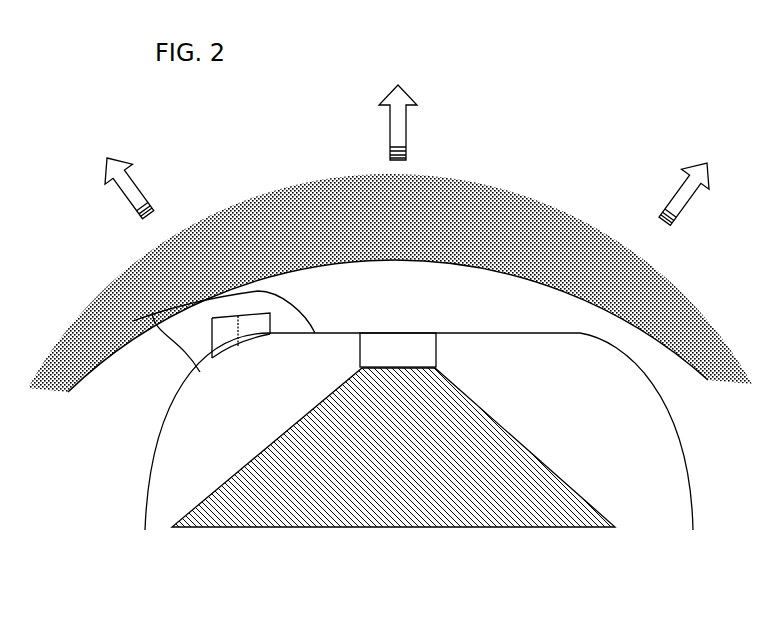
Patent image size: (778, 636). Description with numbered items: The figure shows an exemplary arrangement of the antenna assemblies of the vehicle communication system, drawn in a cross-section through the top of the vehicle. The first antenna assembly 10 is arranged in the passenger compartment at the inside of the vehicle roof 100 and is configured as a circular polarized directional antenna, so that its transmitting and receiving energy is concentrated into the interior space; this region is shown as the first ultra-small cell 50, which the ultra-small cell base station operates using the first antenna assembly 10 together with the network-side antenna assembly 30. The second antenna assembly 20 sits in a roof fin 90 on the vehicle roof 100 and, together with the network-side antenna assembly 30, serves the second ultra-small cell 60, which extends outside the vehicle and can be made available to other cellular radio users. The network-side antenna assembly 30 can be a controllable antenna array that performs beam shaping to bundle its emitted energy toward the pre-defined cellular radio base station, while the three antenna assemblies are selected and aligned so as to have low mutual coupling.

The first antenna assembly 10 is at (442, 347).
The second antenna assembly 20 is at (268, 316).
The network-side antenna assembly 30 is at (219, 320).
The first ultra-small cell 50 is at (503, 433).
The second ultra-small cell 60 is at (522, 186).
The roof fin 90 is at (186, 335).
The vehicle roof 100 is at (547, 333).